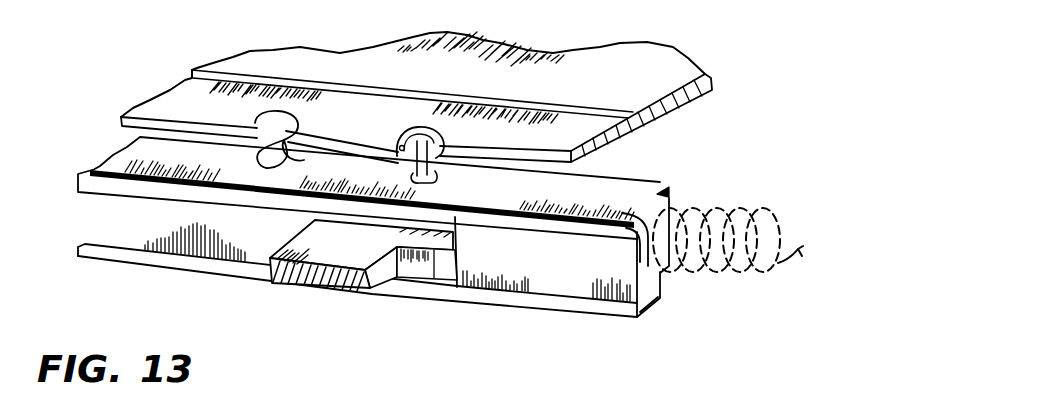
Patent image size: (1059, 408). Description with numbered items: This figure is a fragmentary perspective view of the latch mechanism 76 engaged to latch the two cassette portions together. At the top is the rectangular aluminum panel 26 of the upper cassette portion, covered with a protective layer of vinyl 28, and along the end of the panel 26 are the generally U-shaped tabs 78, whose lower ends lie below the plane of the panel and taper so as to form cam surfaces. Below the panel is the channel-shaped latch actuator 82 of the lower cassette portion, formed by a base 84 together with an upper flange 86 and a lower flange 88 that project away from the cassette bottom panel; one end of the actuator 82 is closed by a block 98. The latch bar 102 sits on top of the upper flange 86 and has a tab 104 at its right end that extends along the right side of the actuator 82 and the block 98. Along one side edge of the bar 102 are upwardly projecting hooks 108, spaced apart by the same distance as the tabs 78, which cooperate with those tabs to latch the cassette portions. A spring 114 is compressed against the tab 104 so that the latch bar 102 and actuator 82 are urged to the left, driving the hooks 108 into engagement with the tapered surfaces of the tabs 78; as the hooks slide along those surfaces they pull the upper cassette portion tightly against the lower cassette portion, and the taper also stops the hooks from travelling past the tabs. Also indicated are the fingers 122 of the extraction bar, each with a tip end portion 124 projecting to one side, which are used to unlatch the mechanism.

The rectangular panel 26 is at (575, 120).
The vinyl layer 28 is at (303, 55).
The latch mechanism 76 is at (362, 126).
The tabs 78 is at (326, 145).
The latch actuator 82 is at (86, 245).
The base 84 is at (110, 196).
The upper flange 86 is at (80, 176).
The lower flange 88 is at (151, 252).
The block 98 is at (563, 283).
The latch bar 102 is at (130, 152).
The tab 104 is at (641, 252).
The hooks 108 is at (428, 161).
The spring 114 is at (760, 213).
The fingers 122 is at (326, 284).
The tip end portion 124 is at (458, 238).